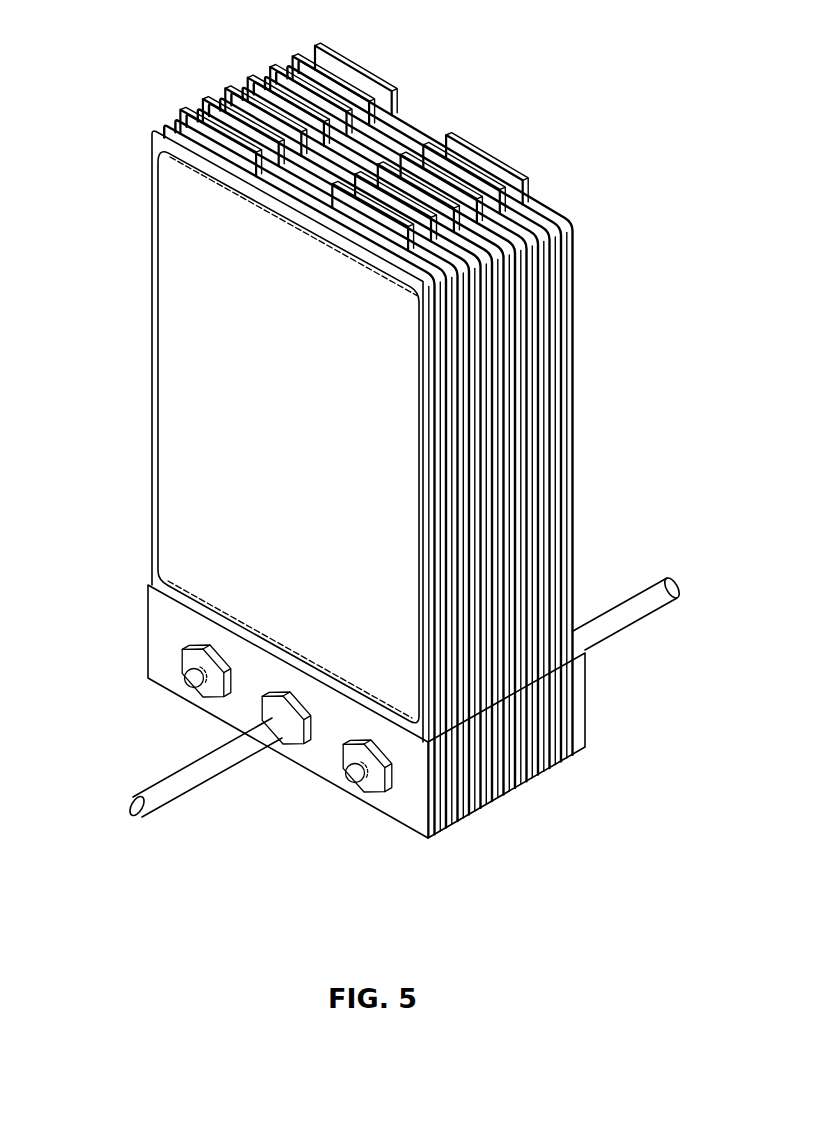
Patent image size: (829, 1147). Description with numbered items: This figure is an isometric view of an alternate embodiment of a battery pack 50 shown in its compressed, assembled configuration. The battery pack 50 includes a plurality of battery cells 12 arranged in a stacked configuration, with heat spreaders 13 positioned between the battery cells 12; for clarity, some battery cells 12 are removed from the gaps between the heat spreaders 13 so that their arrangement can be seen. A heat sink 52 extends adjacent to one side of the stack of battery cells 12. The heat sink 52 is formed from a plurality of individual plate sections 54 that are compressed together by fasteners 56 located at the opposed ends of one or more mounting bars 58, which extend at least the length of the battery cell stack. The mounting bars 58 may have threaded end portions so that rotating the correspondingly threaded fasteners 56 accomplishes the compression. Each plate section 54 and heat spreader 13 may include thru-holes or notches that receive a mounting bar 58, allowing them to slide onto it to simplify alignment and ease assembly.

The battery pack 50 is at (436, 90).
The battery cell 12 is at (283, 444).
The heat spreader 13 is at (569, 243).
The heat sink 52 is at (519, 803).
The plate section 54 is at (165, 675).
The fastener 56 is at (177, 657).
The mounting bar 58 is at (192, 788).